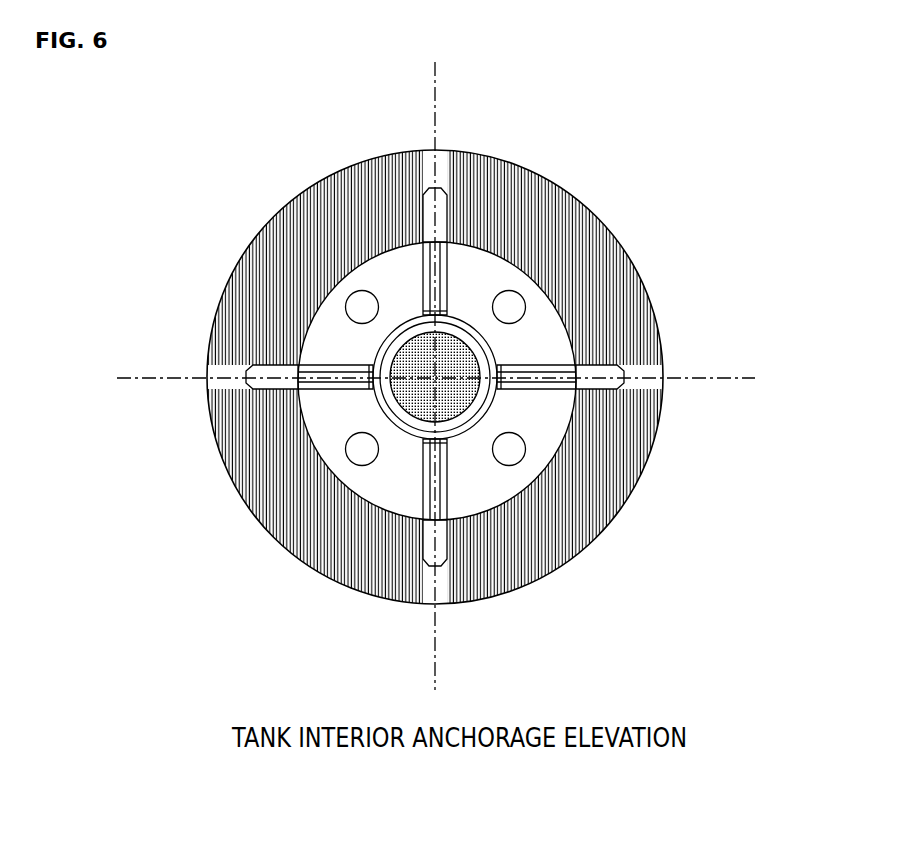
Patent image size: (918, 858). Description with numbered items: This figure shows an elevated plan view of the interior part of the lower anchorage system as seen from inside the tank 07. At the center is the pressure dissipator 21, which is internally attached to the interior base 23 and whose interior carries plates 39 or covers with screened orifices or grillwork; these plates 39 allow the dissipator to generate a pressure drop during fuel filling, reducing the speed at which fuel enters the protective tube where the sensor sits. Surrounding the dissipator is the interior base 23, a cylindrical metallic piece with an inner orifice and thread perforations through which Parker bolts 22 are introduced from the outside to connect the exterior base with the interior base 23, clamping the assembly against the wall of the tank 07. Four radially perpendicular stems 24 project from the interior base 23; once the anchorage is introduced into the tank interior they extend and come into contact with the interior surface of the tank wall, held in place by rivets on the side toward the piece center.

The tank 07 is at (352, 214).
The interior base 23 is at (398, 337).
The plates 39 is at (398, 358).
The pressure dissipator 21 is at (398, 416).
The bolts 22 is at (510, 307).
The stems 24 is at (624, 381).